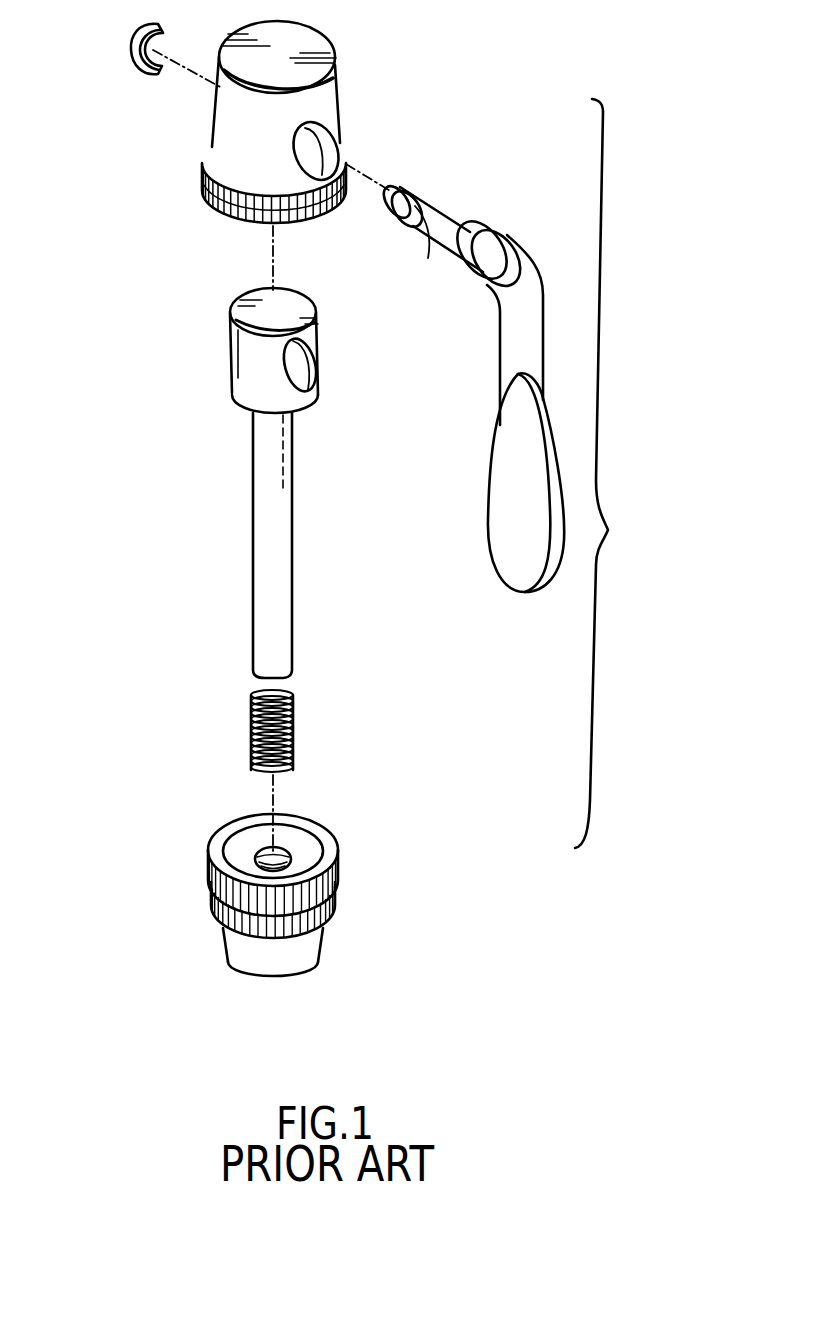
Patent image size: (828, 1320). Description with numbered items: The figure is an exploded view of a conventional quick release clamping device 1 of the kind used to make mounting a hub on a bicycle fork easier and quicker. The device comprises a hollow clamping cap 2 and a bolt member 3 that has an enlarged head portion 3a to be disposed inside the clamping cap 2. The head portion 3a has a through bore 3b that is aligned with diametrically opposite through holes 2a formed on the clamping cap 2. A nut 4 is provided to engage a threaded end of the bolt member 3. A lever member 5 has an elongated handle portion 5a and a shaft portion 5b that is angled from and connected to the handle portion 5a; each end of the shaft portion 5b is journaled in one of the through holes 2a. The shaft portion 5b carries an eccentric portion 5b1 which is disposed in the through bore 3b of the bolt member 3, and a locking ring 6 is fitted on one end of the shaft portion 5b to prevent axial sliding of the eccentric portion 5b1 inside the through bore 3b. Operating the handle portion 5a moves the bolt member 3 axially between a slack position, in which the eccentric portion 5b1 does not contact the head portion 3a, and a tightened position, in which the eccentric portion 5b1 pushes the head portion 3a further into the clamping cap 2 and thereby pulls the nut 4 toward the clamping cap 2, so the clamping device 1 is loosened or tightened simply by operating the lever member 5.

The quick release clamping device 1 is at (599, 473).
The hollow clamping cap 2 is at (343, 106).
The through holes 2a is at (333, 152).
The bolt member 3 is at (305, 530).
The enlarged head portion 3a is at (300, 323).
The through bore 3b is at (297, 370).
The nut 4 is at (338, 867).
The lever member 5 is at (479, 367).
The elongated handle portion 5a is at (525, 355).
The shaft portion 5b is at (445, 267).
The eccentric portion 5b1 is at (453, 227).
The locking ring 6 is at (177, 25).